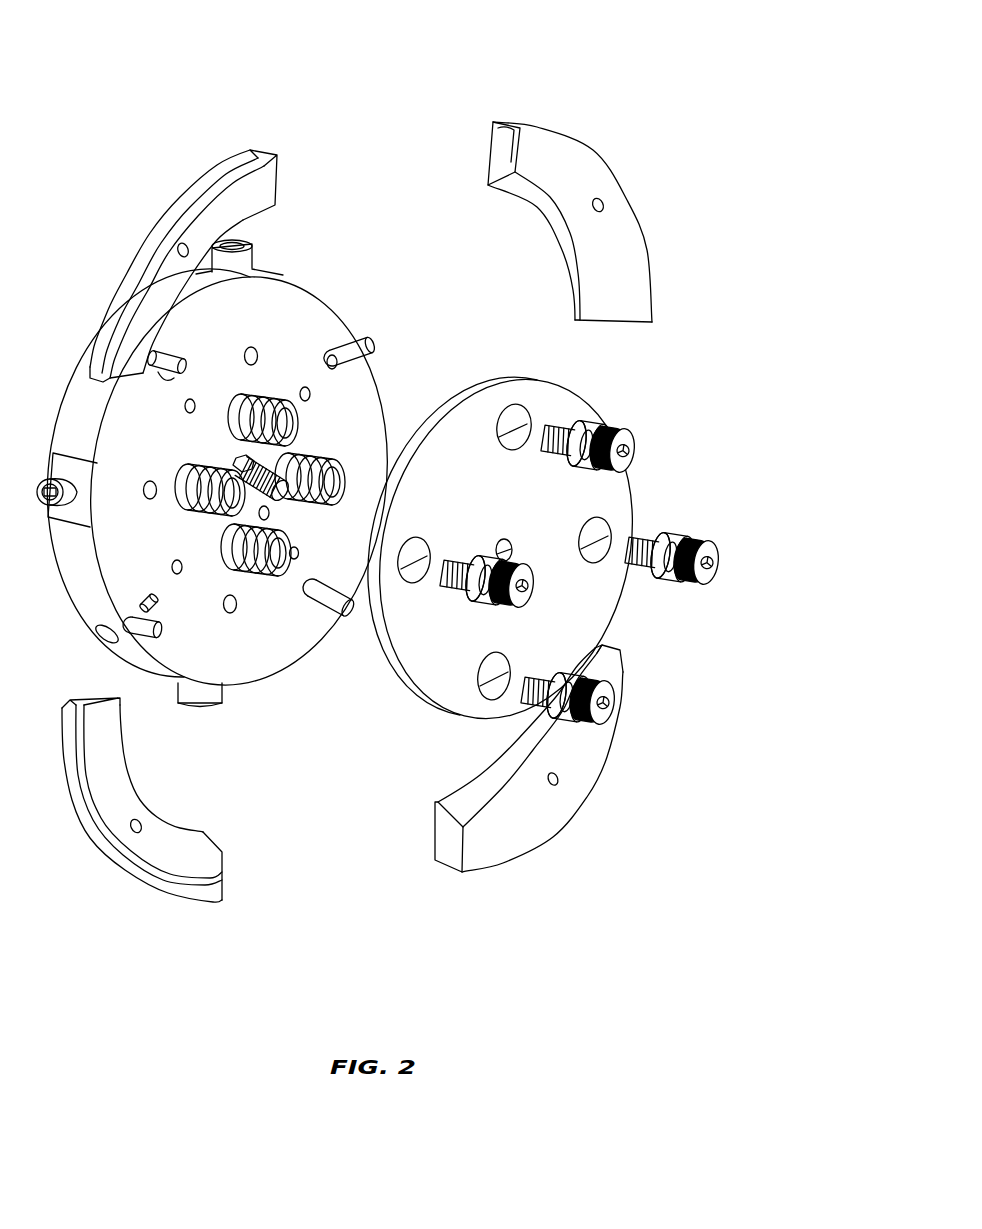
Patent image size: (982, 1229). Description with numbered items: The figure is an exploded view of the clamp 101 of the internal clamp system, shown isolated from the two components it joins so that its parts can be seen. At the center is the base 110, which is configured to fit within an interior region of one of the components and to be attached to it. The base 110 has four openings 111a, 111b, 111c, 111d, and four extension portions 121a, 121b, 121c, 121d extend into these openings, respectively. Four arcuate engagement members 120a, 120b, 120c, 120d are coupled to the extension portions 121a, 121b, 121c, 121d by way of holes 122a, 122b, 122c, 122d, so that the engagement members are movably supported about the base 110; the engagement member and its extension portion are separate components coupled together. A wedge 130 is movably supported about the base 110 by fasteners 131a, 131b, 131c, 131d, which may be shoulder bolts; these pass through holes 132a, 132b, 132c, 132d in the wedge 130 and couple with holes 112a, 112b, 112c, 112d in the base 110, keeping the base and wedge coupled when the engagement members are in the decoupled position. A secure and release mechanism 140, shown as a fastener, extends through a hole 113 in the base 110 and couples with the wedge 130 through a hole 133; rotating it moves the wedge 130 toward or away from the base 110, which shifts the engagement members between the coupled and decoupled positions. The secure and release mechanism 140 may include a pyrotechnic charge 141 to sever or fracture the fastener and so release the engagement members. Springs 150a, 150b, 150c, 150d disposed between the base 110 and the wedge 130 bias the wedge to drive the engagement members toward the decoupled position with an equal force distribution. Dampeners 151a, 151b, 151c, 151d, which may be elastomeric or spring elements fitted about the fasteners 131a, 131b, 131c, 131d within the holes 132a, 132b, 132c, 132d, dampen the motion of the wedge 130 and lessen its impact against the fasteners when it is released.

The clamp 101 is at (181, 56).
The base 110 is at (72, 394).
The opening 111a is at (162, 384).
The opening 111b is at (314, 582).
The opening 111c is at (160, 598).
The opening 111d is at (338, 364).
The hole 112a is at (251, 346).
The hole 112b is at (234, 614).
The hole 112c is at (146, 494).
The hole 112d is at (305, 384).
The hole 113 is at (236, 458).
The engagement member 120a is at (130, 264).
The engagement member 120b is at (530, 846).
The engagement member 120c is at (72, 815).
The engagement member 120d is at (580, 150).
The extension portion 121a is at (176, 352).
The extension portion 121b is at (345, 615).
The extension portion 121c is at (158, 642).
The extension portion 121d is at (360, 330).
The hole 122a is at (180, 243).
The hole 122b is at (558, 782).
The hole 122c is at (128, 832).
The hole 122d is at (603, 202).
The wedge 130 is at (489, 376).
The fastener 131a is at (632, 441).
The fastener 131b is at (615, 704).
The fastener 131c is at (540, 583).
The fastener 131d is at (710, 556).
The hole 132a is at (527, 405).
The hole 132b is at (488, 698).
The hole 132c is at (412, 584).
The hole 132d is at (612, 526).
The hole 133 is at (505, 538).
The secure and release mechanism 140 is at (283, 496).
The pyrotechnic charge 141 is at (240, 462).
The spring 150a is at (275, 379).
The spring 150b is at (263, 576).
The spring 150c is at (198, 512).
The spring 150d is at (322, 454).
The dampener 151a is at (590, 430).
The dampener 151b is at (580, 674).
The dampener 151c is at (483, 602).
The dampener 151d is at (670, 542).